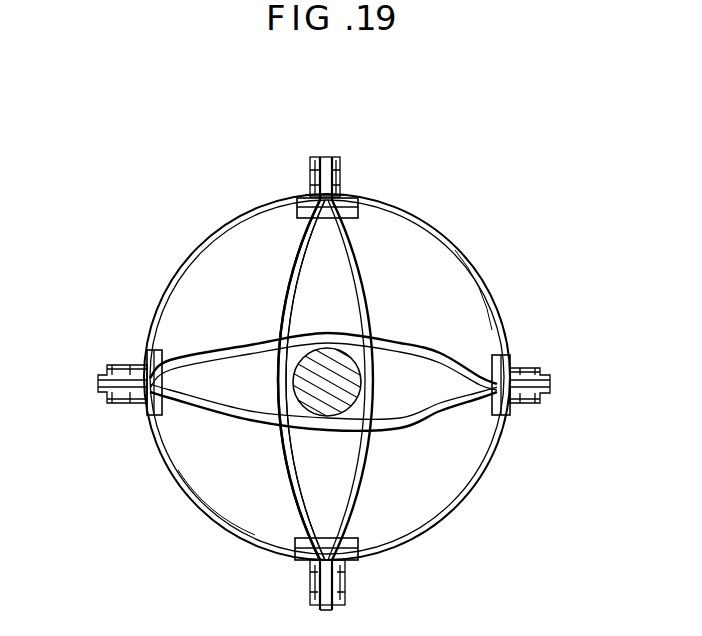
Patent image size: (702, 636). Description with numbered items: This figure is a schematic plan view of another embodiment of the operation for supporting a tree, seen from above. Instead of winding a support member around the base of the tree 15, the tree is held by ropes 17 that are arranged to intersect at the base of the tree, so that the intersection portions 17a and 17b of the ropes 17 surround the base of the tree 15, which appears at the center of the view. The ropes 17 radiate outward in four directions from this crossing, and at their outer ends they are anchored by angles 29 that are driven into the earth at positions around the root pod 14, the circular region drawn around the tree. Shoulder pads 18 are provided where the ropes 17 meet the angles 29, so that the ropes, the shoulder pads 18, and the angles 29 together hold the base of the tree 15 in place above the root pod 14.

The root pod 14 is at (428, 253).
The tree 15 is at (353, 401).
The ropes 17 is at (295, 257).
The intersection portion 17a is at (310, 330).
The intersection portion 17b is at (275, 400).
The shoulder pads 18 is at (366, 200).
The angles 29 is at (310, 172).